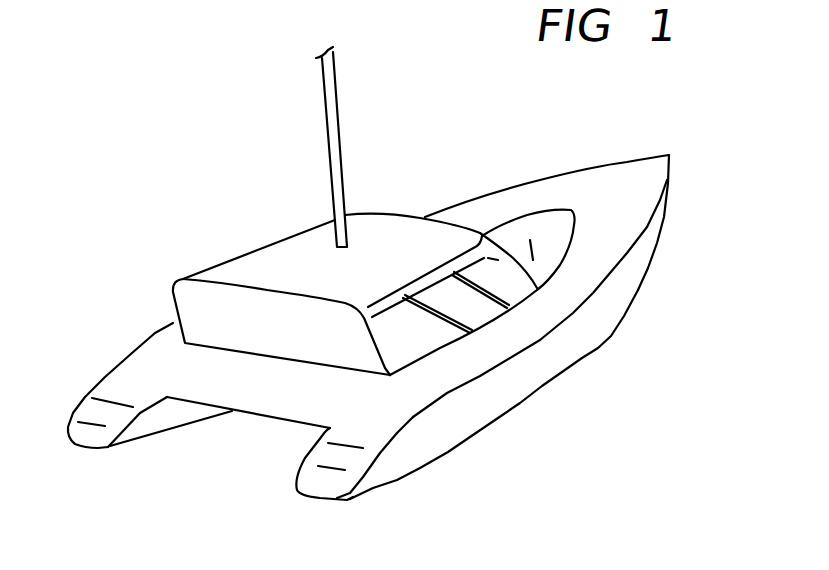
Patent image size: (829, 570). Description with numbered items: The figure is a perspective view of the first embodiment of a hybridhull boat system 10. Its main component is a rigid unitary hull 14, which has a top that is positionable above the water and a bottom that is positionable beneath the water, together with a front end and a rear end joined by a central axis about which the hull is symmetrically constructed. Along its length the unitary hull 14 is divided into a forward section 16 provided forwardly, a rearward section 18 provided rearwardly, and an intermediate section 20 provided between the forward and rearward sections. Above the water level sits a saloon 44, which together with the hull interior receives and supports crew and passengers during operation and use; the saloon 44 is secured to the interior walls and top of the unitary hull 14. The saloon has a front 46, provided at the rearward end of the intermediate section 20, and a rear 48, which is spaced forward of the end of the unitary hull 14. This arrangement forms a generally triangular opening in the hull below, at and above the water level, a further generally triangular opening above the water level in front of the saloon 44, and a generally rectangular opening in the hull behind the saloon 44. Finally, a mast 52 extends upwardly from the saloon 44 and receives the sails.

The hybridhull boat system 10 is at (192, 168).
The rigid unitary hull 14 is at (547, 388).
The forward section 16 is at (635, 198).
The rearward section 18 is at (400, 418).
The intermediate section 20 is at (547, 312).
The saloon 44 is at (217, 313).
The front of the saloon 46 is at (522, 258).
The rear of the saloon 48 is at (270, 398).
The mast 52 is at (327, 148).